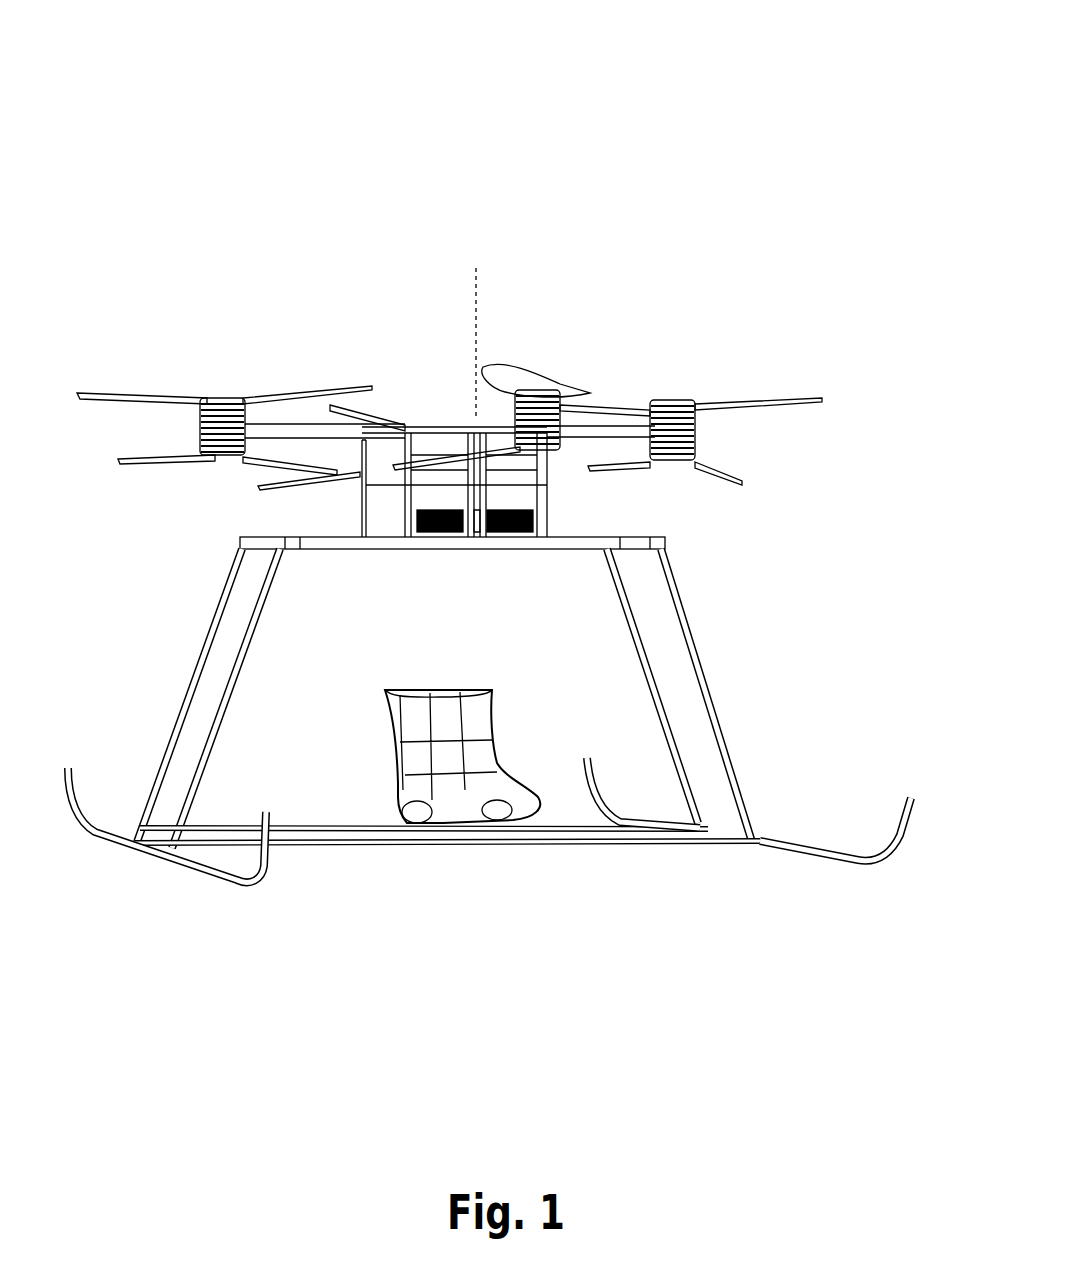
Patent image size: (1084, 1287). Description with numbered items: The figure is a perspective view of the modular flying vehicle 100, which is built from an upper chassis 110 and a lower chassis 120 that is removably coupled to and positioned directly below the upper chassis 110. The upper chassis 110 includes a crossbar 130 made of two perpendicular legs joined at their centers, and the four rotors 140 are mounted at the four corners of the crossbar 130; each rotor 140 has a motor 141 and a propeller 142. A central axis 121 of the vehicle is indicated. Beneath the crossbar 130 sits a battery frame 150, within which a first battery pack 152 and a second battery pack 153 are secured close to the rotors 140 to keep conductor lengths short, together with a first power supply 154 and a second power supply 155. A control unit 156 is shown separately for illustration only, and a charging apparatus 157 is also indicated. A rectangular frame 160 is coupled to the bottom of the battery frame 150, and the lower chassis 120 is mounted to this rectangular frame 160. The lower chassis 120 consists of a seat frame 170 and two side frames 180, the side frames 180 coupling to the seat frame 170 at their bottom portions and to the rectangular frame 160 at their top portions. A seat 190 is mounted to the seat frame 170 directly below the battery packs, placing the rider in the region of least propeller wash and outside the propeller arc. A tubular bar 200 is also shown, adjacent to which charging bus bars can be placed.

The modular flying vehicle 100 is at (664, 86).
The upper chassis 110 is at (438, 380).
The lower chassis 120 is at (755, 666).
The central axis 121 is at (479, 267).
The crossbar 130 is at (316, 412).
The rotor 140 is at (669, 378).
The motor 141 is at (205, 428).
The propeller 142 is at (122, 394).
The battery frame 150 is at (560, 497).
The first battery pack 152 is at (375, 490).
The second battery pack 153 is at (503, 540).
The first power supply 154 is at (452, 542).
The second power supply 155 is at (530, 540).
The control unit 156 is at (830, 469).
The charging apparatus 157 is at (895, 1009).
The rectangular frame 160 is at (558, 553).
The seat frame 170 is at (328, 846).
The side frame 180 is at (742, 770).
The seat 190 is at (446, 836).
The tubular bar 200 is at (337, 545).